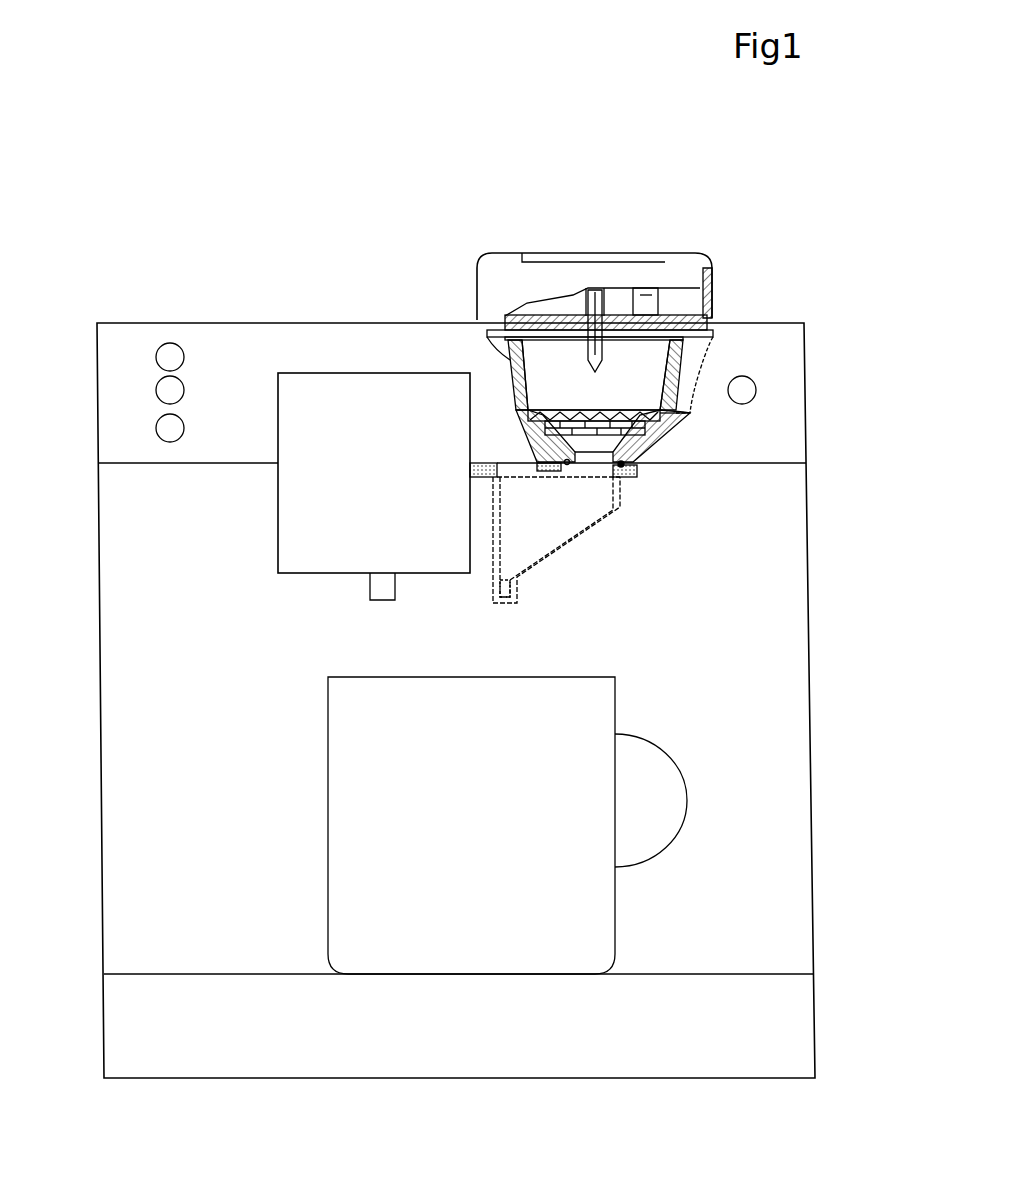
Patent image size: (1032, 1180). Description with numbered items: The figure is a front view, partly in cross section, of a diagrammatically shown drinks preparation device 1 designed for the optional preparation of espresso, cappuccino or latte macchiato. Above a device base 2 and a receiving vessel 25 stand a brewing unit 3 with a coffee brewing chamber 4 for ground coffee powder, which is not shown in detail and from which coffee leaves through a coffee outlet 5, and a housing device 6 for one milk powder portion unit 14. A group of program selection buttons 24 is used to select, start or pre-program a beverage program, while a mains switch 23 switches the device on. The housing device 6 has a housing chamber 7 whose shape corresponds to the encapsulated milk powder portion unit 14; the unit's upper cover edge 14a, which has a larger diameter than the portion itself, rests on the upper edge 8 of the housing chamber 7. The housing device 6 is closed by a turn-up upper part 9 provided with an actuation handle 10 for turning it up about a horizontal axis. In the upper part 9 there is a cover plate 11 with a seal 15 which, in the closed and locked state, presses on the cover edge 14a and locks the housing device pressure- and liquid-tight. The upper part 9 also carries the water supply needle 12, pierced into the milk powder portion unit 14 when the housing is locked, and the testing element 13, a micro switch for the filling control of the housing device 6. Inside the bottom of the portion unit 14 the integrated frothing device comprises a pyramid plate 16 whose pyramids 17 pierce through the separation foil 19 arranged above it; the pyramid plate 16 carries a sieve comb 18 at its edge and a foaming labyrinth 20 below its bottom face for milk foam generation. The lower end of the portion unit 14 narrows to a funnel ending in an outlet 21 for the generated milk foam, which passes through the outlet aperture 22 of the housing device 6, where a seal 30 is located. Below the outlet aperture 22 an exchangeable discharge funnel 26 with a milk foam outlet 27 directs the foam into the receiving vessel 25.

The drinks preparation device 1 is at (322, 254).
The device base 2 is at (790, 993).
The brewing unit 3 is at (247, 357).
The coffee brewing chamber 4 is at (340, 420).
The coffee outlet 5 is at (383, 590).
The housing device 6 is at (536, 232).
The housing chamber 7 is at (678, 353).
The upper housing chamber edge 8 is at (497, 307).
The upper part 9 is at (673, 268).
The actuation handle 10 is at (585, 258).
The cover plate 11 is at (685, 308).
The water supply needle 12 is at (595, 345).
The testing element 13 is at (647, 302).
The milk powder portion unit 14 is at (632, 378).
The upper cover edge 14a is at (700, 360).
The seal 15 is at (505, 303).
The pyramid plate 16 is at (640, 450).
The pyramids 17 is at (668, 430).
The sieve comb 18 is at (641, 418).
The separation foil 19 is at (686, 412).
The foaming labyrinth 20 is at (643, 462).
The outlet 21 is at (598, 460).
The outlet aperture 22 is at (624, 466).
The mains switch 23 is at (757, 385).
The program selection buttons 24 is at (155, 360).
The receiving vessel 25 is at (348, 760).
The discharge funnel 26 is at (577, 503).
The milk foam outlet 27 is at (507, 588).
The seal 30 is at (532, 448).